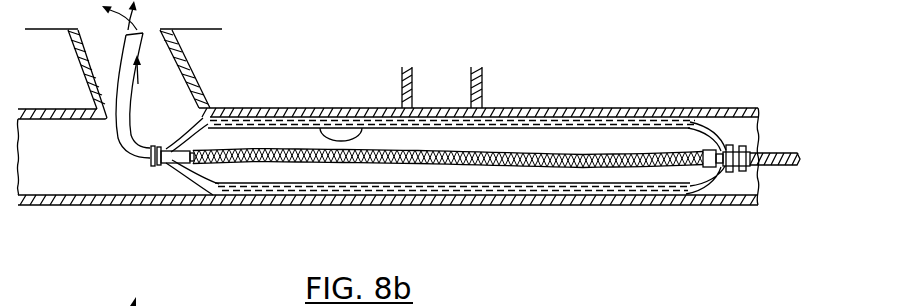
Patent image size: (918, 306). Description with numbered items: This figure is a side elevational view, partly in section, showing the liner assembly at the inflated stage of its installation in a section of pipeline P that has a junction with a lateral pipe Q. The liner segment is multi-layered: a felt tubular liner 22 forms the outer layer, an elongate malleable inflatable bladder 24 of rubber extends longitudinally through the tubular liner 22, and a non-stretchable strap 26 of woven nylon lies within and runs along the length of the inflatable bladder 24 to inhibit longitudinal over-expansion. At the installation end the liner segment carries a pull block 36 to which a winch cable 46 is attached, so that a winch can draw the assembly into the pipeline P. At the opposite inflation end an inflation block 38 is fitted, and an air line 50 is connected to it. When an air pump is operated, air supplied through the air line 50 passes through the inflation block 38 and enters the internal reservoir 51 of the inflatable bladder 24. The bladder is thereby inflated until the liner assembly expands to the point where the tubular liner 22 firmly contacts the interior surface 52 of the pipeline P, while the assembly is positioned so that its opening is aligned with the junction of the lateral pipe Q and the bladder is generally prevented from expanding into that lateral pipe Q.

The tubular liner 22 is at (612, 108).
The malleable inflatable bladder 24 is at (605, 129).
The non-stretchable strap 26 is at (283, 158).
The pull block 36 is at (702, 156).
The inflation block 38 is at (157, 145).
The winch cable 46 is at (776, 167).
The air line 50 is at (120, 94).
The internal reservoir 51 is at (513, 133).
The interior surface 52 is at (306, 109).
The pipeline P is at (415, 207).
The lateral pipe Q is at (484, 78).